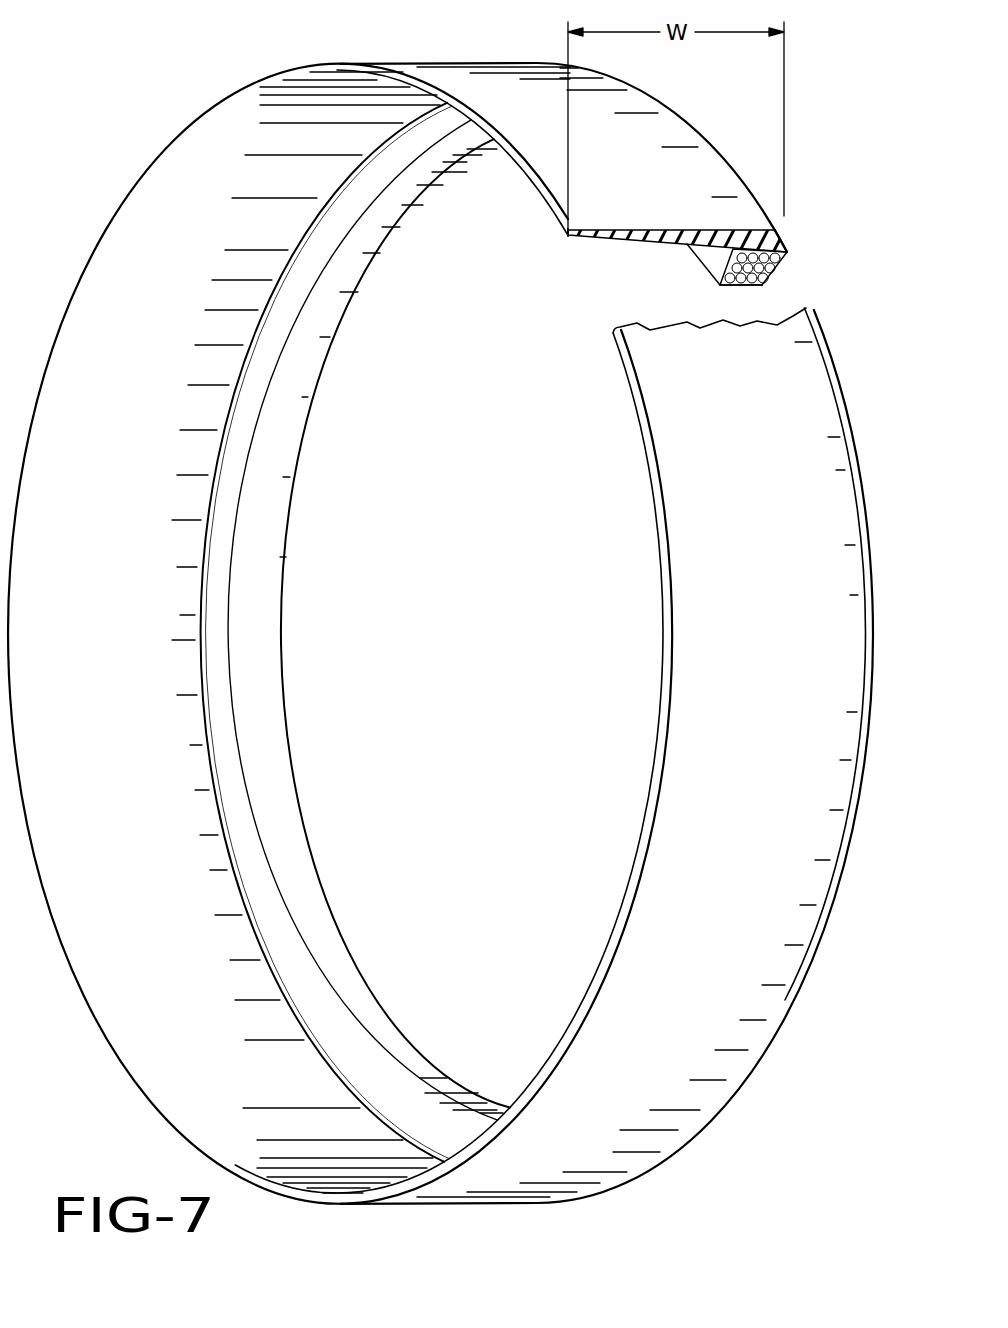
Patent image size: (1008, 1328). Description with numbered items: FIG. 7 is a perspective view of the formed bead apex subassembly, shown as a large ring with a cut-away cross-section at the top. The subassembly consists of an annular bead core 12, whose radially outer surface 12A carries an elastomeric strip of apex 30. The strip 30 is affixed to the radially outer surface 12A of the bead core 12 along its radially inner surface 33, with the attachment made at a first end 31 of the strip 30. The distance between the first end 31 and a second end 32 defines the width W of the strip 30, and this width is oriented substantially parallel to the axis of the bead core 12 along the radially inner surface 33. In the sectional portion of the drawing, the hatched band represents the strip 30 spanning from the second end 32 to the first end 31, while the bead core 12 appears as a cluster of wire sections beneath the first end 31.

The annular bead core 12 is at (778, 262).
The radially outer surface 12A is at (721, 287).
The elastomeric strip of apex 30 is at (648, 229).
The first end 31 is at (786, 237).
The second end 32 is at (567, 231).
The radially inner surface 33 is at (686, 246).